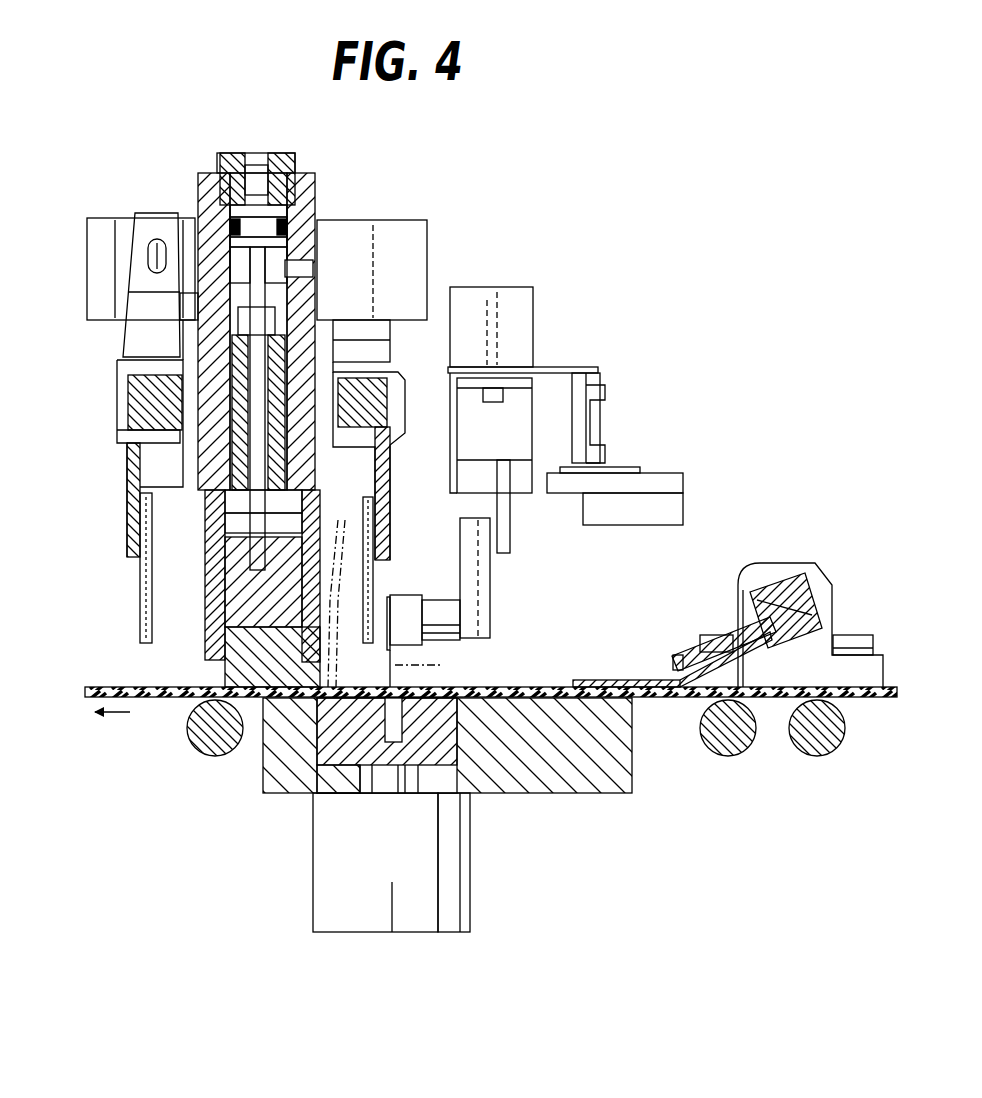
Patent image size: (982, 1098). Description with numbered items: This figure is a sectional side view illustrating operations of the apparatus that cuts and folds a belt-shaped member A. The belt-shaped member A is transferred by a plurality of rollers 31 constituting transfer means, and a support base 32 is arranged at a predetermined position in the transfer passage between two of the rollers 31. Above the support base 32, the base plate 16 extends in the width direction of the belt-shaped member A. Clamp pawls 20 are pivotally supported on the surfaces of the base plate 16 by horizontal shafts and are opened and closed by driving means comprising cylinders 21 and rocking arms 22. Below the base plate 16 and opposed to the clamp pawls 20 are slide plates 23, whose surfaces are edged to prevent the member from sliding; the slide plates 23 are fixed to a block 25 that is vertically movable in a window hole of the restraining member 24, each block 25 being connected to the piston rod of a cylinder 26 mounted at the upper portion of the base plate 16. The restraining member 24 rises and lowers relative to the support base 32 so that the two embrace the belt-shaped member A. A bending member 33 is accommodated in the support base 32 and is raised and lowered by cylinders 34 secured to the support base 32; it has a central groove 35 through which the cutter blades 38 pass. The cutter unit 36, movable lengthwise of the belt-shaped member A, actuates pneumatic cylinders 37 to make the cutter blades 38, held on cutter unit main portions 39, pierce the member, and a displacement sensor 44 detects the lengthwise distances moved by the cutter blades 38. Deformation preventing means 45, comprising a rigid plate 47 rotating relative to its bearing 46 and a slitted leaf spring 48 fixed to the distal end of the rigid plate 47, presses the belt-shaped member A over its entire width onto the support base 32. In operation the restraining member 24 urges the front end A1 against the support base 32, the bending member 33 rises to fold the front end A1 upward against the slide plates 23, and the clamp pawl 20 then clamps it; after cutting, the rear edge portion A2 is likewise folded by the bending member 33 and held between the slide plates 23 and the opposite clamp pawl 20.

The base plate 16 is at (213, 227).
The cylinder 26 is at (292, 238).
The cylinder 21 is at (397, 222).
The rocking arm 22 is at (137, 305).
The clamp pawl 20 is at (127, 480).
The slide plate 23 is at (146, 620).
The block 25 is at (245, 596).
The restraining member 24 is at (212, 672).
The cutter unit 36 is at (601, 393).
The pneumatic cylinder 37 is at (503, 288).
The cutter unit main portion 39 is at (542, 423).
The displacement sensor 44 is at (685, 505).
The cutter blade 38 is at (447, 630).
The deformation preventing means 45 is at (705, 616).
The bearing 46 is at (793, 562).
The rigid plate 47 is at (758, 660).
The leaf spring 48 is at (598, 680).
The roller 31 is at (197, 752).
The support base 32 is at (562, 785).
The bending member 33 is at (427, 730).
The cylinder 34 is at (318, 873).
The groove 35 is at (317, 780).
The belt-shaped member A is at (495, 680).
The front end of the belt-shaped member A1 is at (400, 760).
The rear edge portion of the belt-shaped member A2 is at (338, 687).